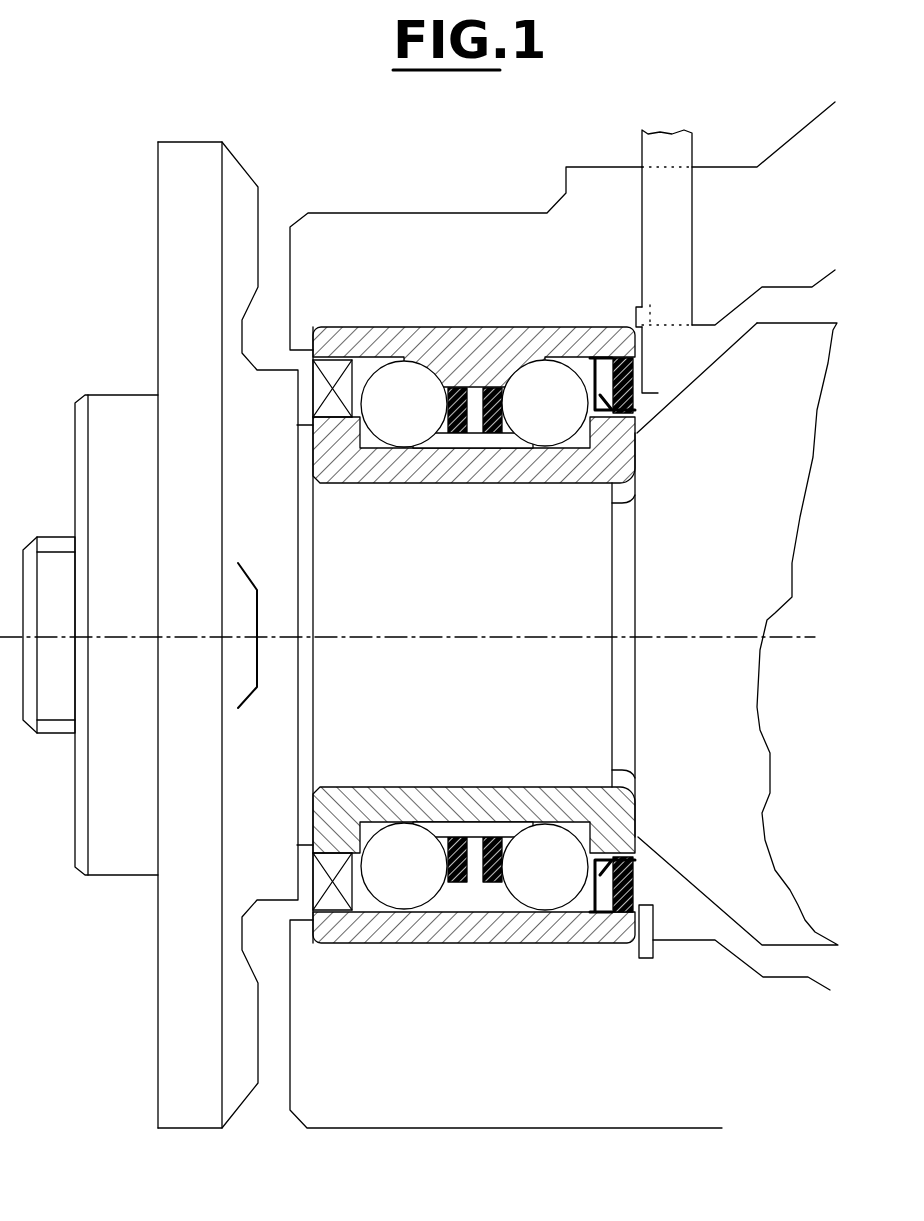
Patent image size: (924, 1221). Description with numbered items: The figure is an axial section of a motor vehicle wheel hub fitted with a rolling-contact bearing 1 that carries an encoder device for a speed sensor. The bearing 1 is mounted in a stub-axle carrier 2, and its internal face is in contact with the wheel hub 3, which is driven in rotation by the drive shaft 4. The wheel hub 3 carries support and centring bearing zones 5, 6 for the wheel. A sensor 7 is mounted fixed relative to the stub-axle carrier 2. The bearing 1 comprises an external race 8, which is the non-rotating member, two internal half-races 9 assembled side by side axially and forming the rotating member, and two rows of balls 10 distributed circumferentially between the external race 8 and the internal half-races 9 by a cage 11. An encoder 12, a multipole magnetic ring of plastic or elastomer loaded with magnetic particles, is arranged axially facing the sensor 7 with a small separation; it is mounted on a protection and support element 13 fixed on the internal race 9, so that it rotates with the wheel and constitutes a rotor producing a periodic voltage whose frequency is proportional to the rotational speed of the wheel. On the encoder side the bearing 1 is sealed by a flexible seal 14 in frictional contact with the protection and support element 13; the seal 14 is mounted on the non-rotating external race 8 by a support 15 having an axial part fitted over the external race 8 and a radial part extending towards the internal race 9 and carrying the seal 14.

The rolling-contact bearing 1 is at (579, 553).
The stub-axle carrier 2 is at (403, 257).
The wheel hub 3 is at (188, 142).
The drive shaft 4 is at (747, 565).
The support and centring bearing zone 5 is at (158, 232).
The support and centring bearing zone 6 is at (115, 395).
The sensor 7 is at (665, 355).
The external race 8 is at (378, 340).
The internal half-races 9 is at (336, 445).
The balls 10 is at (410, 385).
The cage 11 is at (494, 385).
The encoder 12 is at (642, 393).
The protection and support element 13 is at (650, 377).
The flexible seal 14 is at (640, 443).
The support 15 is at (597, 340).